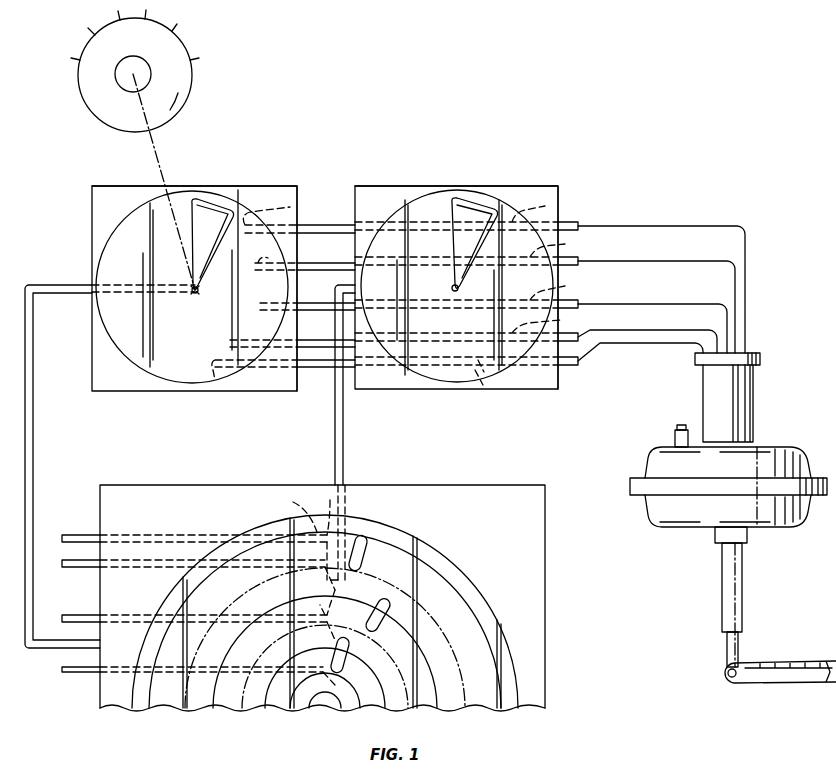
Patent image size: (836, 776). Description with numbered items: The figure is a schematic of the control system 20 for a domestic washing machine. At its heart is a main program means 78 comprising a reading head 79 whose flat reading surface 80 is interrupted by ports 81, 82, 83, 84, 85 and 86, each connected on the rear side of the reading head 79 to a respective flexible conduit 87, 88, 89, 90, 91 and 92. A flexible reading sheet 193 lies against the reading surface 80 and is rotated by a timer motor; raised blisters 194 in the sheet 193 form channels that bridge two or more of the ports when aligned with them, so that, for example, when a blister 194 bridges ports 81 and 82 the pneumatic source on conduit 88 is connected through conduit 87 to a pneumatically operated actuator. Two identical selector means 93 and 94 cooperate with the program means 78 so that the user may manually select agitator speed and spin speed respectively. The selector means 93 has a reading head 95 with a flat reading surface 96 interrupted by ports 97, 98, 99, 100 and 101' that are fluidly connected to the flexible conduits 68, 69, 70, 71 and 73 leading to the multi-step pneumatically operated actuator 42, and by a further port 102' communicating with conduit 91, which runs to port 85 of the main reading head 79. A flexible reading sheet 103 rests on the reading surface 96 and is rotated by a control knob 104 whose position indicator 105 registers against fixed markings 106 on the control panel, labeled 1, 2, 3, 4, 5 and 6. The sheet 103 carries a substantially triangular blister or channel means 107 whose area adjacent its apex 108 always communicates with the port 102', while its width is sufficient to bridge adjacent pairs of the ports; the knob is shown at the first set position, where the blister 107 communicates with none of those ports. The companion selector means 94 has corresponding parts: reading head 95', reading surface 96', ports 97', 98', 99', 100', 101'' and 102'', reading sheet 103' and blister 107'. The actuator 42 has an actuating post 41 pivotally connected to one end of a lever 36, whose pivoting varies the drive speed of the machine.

The first position marking 1 is at (68, 57).
The position marking 2 is at (84, 25).
The position marking 3 is at (115, 10).
The position marking 4 is at (148, 9).
The position marking 5 is at (181, 23).
The last position marking 6 is at (201, 57).
The control system 20 is at (703, 106).
The lever 36 is at (806, 685).
The actuating post 41 is at (738, 602).
The multi-step pneumatically operated actuator means 42 is at (772, 395).
The flexible conduit 68 is at (330, 224).
The flexible conduit 69 is at (330, 262).
The flexible conduit 70 is at (330, 302).
The flexible conduit 71 is at (330, 339).
The flexible conduit 73 is at (328, 370).
The main program means 78 is at (566, 459).
The reading head 79 is at (545, 540).
The reading surface 80 is at (480, 490).
The port 81 is at (294, 511).
The port 82 is at (325, 533).
The port 83 is at (325, 592).
The port 84 is at (336, 600).
The port 85 is at (337, 620).
The port 86 is at (340, 687).
The flexible conduit means 87 is at (80, 534).
The flexible conduit means 88 is at (80, 568).
The flexible conduit means 89 is at (345, 462).
The flexible conduit means 90 is at (70, 614).
The flexible conduit means 91 is at (60, 648).
The flexible conduit means 92 is at (80, 673).
The selector means 93 is at (268, 105).
The companion selector means 94 is at (490, 130).
The reading head 95 is at (194, 272).
The reading head 95' is at (456, 271).
The reading surface 96 is at (169, 286).
The reading surface 96' is at (454, 263).
The port 97 is at (285, 215).
The port 97' is at (476, 213).
The port 98 is at (272, 275).
The port 98' is at (479, 250).
The port 99 is at (268, 314).
The port 99' is at (478, 292).
The port 100 is at (244, 340).
The port 100' is at (481, 326).
The port 101' is at (238, 388).
The port 101'' is at (466, 386).
The port 102' is at (179, 308).
The port 102'' is at (446, 310).
The flexible reading sheet 103 is at (212, 221).
The flexible reading sheet 103' is at (469, 221).
The rotatable control knob 104 is at (178, 93).
The position indicator means 105 is at (78, 78).
The fixed markings 106 is at (212, 20).
The triangular shaped blister or channel means 107 is at (234, 219).
The triangular shaped blister or channel means 107' is at (488, 218).
The apex 108 is at (197, 296).
The flexible reading sheet 193 is at (468, 568).
The raised blisters 194 is at (375, 548).